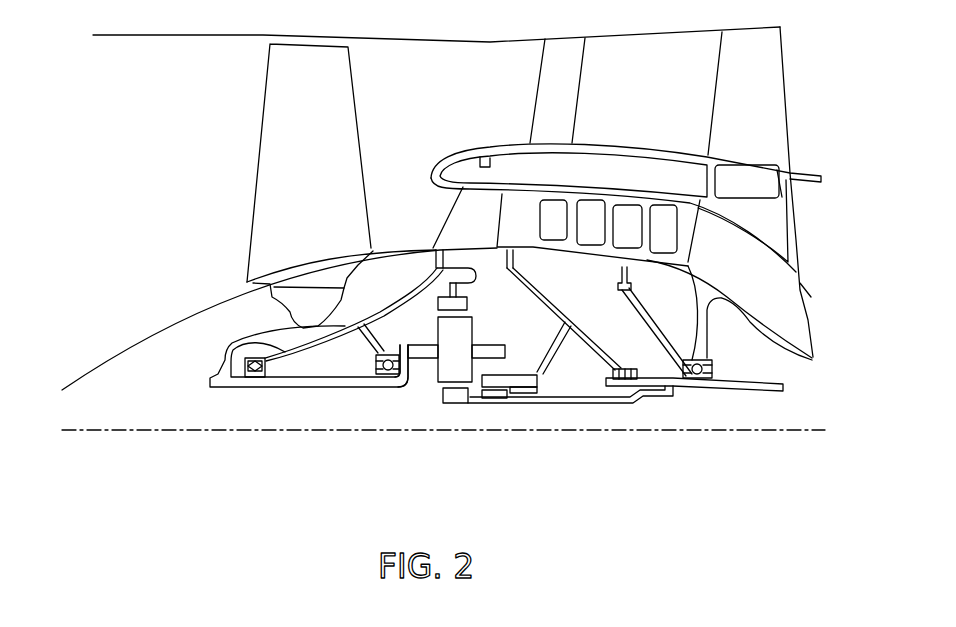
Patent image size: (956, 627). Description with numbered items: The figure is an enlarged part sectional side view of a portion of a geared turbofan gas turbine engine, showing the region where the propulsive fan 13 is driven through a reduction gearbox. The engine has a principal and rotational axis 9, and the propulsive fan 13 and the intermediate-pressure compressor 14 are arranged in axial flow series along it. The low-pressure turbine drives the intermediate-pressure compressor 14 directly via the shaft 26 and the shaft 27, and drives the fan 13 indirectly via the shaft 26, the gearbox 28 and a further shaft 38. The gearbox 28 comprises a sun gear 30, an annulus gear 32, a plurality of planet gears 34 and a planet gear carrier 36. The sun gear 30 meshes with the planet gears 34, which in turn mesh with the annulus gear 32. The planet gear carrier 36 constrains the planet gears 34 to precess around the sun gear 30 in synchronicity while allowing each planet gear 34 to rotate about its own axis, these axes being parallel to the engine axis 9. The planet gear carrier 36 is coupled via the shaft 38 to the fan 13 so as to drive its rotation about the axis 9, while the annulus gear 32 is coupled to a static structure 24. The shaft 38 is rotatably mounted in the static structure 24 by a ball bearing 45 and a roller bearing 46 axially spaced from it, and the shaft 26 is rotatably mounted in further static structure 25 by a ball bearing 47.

The principal and rotational axis 9 is at (218, 432).
The propulsive fan 13 is at (272, 188).
The intermediate-pressure compressor 14 is at (628, 220).
The static structure 24 is at (462, 216).
The further static structure 25 is at (730, 240).
The shaft 26 is at (673, 392).
The shaft 27 is at (651, 320).
The gearbox 28 is at (422, 392).
The sun gear 30 is at (456, 400).
The annulus gear 32 is at (448, 306).
The planet gears 34 is at (445, 374).
The planet gear carrier 36 is at (423, 368).
The shaft 38 is at (276, 388).
The ball bearing 45 is at (380, 362).
The roller bearing 46 is at (250, 360).
The ball bearing 47 is at (714, 380).